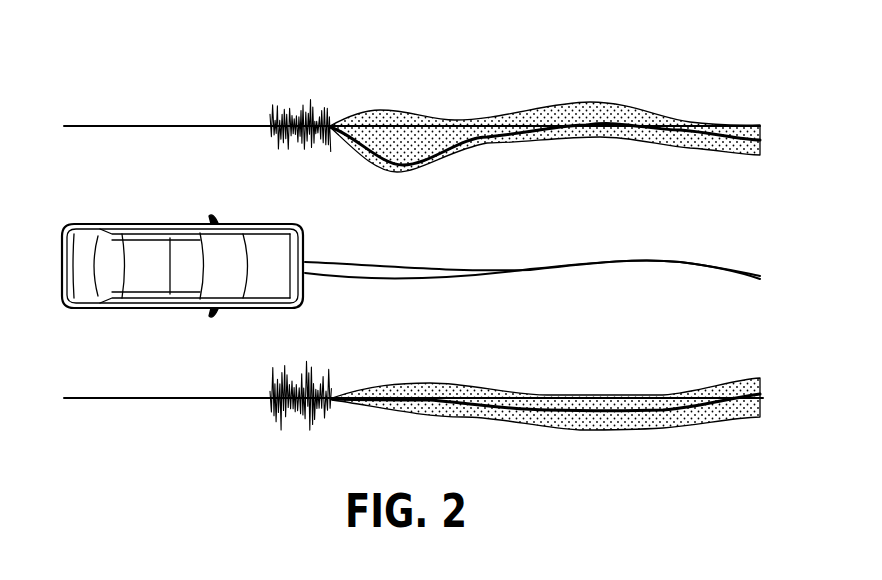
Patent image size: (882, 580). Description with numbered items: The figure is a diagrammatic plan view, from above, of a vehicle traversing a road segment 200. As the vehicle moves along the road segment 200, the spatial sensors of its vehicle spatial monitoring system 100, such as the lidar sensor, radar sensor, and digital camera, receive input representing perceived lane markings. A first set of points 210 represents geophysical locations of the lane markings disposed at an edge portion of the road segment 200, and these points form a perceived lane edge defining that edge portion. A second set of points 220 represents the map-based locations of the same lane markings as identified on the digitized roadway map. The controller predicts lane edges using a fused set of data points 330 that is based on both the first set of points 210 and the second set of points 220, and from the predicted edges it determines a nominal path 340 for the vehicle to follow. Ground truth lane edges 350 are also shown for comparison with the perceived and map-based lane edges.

The vehicle spatial monitoring system 100 is at (171, 211).
The road segment 200 is at (707, 225).
The first set of points 210 is at (442, 152).
The second set of points 220 is at (324, 95).
The fused set of data points 330 is at (417, 120).
The nominal path 340 is at (400, 283).
The ground truth lane edges 350 is at (173, 125).